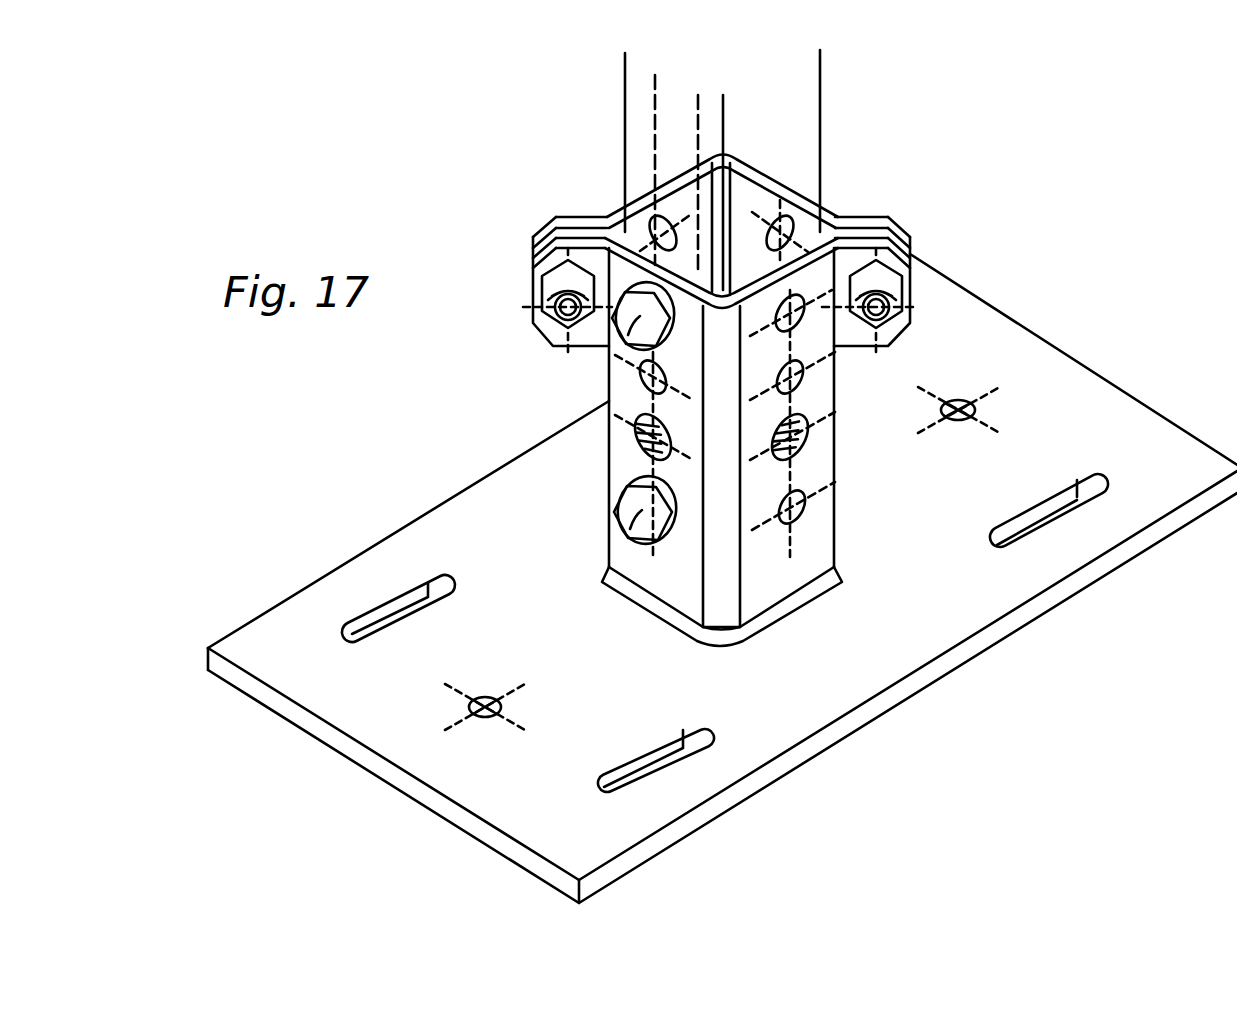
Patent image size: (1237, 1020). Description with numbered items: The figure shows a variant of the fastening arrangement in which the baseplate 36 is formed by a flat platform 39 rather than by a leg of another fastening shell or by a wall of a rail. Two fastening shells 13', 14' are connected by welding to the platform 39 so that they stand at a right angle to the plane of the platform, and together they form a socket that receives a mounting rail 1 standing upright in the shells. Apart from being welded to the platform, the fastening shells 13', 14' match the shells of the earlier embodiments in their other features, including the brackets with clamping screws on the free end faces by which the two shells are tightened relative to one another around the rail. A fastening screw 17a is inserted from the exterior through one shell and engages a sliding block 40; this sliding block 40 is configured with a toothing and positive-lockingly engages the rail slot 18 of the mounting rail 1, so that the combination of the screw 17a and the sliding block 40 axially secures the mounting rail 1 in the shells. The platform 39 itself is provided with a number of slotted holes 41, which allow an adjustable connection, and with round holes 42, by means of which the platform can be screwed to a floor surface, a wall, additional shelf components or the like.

The mounting rail 1 is at (821, 102).
The fastening shell 13' is at (764, 437).
The fastening shell 14' is at (719, 246).
The fastening screw 17a is at (631, 337).
The rail slot 18 is at (668, 107).
The baseplate 36 is at (817, 677).
The platform 39 is at (820, 710).
The sliding block 40 is at (699, 250).
The slotted holes 41 is at (397, 612).
The round holes 42 is at (500, 705).